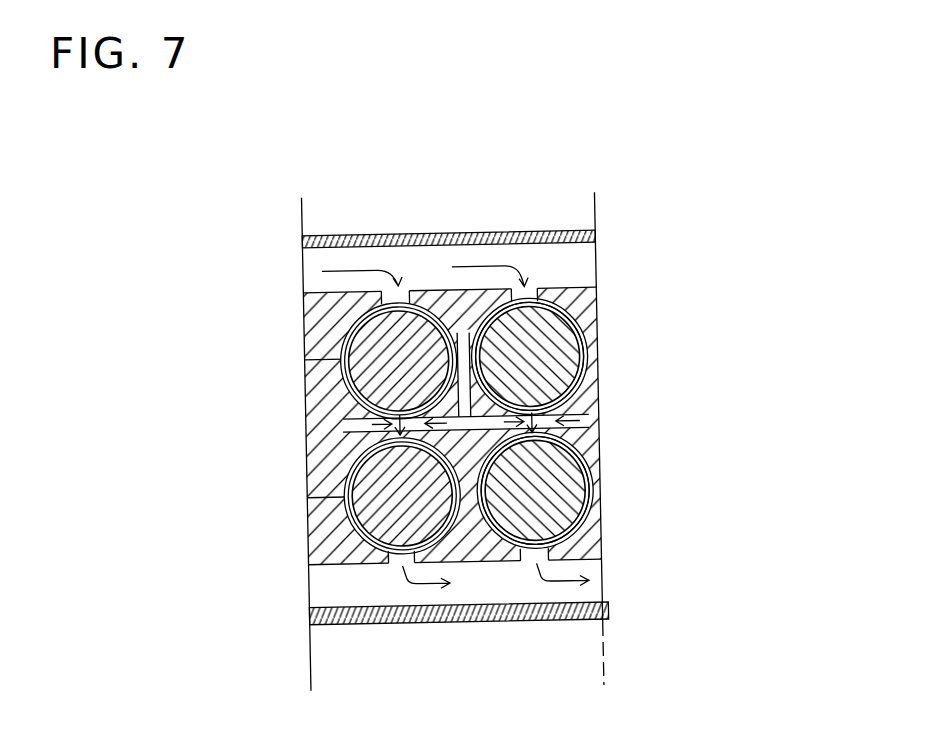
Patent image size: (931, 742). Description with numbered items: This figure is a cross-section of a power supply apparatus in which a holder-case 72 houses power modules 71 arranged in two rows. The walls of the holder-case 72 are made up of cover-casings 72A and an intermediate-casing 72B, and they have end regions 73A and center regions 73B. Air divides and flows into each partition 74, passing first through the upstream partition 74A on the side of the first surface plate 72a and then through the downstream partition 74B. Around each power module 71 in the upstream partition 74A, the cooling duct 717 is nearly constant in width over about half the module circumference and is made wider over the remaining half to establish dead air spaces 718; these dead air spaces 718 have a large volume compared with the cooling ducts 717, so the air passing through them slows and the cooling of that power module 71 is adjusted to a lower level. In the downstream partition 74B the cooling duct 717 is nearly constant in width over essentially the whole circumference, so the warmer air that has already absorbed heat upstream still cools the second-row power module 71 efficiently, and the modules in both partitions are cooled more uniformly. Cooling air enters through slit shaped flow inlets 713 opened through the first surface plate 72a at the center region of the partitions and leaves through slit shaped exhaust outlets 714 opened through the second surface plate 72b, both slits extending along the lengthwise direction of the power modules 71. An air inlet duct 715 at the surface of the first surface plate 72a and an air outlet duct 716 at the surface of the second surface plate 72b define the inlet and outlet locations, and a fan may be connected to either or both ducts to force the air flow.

The power module 71 is at (560, 320).
The holder-case 72 is at (212, 556).
The cover-casing 72A is at (299, 296).
The intermediate-casing 72B is at (299, 366).
The first surface plate 72a is at (450, 289).
The second surface plate 72b is at (491, 562).
The end region 73A is at (488, 335).
The center region 73B is at (527, 560).
The partition 74 is at (766, 378).
The upstream partition 74A is at (598, 352).
The downstream partition 74B is at (599, 468).
The slit shaped flow inlet 713 is at (409, 275).
The slit shaped exhaust outlet 714 is at (396, 576).
The air inlet duct 715 is at (300, 270).
The air outlet duct 716 is at (326, 592).
The cooling duct 717 is at (593, 343).
The dead air space 718 is at (542, 320).